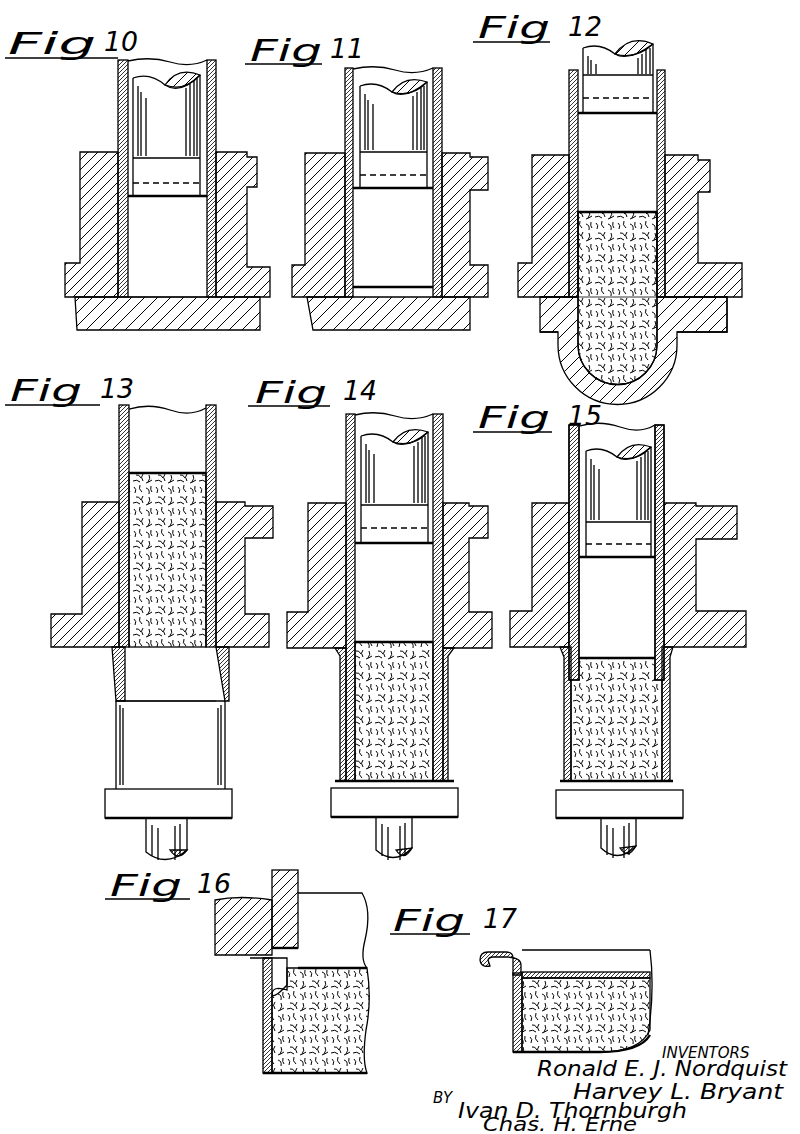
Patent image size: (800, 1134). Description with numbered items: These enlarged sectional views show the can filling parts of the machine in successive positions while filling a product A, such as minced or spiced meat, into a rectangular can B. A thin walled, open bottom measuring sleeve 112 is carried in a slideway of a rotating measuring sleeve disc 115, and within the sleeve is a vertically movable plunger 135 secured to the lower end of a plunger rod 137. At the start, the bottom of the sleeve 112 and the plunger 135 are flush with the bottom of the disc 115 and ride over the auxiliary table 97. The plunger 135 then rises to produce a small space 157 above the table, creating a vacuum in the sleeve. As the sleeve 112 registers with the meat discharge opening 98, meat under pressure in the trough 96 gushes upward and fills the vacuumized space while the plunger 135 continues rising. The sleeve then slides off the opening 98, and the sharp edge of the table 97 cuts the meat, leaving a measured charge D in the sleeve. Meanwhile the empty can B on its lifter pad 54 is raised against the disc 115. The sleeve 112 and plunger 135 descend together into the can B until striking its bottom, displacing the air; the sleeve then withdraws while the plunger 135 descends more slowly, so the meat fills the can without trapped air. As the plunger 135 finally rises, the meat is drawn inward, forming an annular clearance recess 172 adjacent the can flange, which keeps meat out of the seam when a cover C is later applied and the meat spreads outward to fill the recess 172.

In FIG. 13, the lifter pad 54 is at (123, 804).
In FIG. 14, the lifter pad 54 is at (355, 802).
In FIG. 15, the lifter pad 54 is at (580, 801).
In FIG. 12, the trough 96 is at (658, 360).
In FIG. 10, the auxiliary table 97 is at (95, 318).
In FIG. 11, the auxiliary table 97 is at (328, 317).
In FIG. 12, the auxiliary table 97 is at (707, 320).
In FIG. 12, the meat discharge opening 98 is at (617, 292).
In FIG. 10, the measuring sleeve 112 is at (123, 222).
In FIG. 11, the measuring sleeve 112 is at (437, 220).
In FIG. 12, the measuring sleeve 112 is at (660, 172).
In FIG. 13, the measuring sleeve 112 is at (125, 557).
In FIG. 14, the measuring sleeve 112 is at (441, 570).
In FIG. 15, the measuring sleeve 112 is at (571, 574).
In FIG. 16, the measuring sleeve 112 is at (282, 872).
In FIG. 10, the measuring sleeve disc 115 is at (100, 175).
In FIG. 11, the measuring sleeve disc 115 is at (318, 182).
In FIG. 12, the measuring sleeve disc 115 is at (542, 180).
In FIG. 13, the measuring sleeve disc 115 is at (243, 524).
In FIG. 14, the measuring sleeve disc 115 is at (325, 524).
In FIG. 15, the measuring sleeve disc 115 is at (549, 524).
In FIG. 16, the measuring sleeve disc 115 is at (233, 932).
In FIG. 10, the plunger 135 is at (167, 246).
In FIG. 11, the plunger 135 is at (393, 222).
In FIG. 12, the plunger 135 is at (617, 162).
In FIG. 13, the plunger 135 is at (167, 444).
In FIG. 14, the plunger 135 is at (394, 592).
In FIG. 15, the plunger 135 is at (617, 607).
In FIG. 16, the plunger 135 is at (333, 930).
In FIG. 10, the plunger rod 137 is at (157, 103).
In FIG. 11, the plunger rod 137 is at (402, 112).
In FIG. 12, the plunger rod 137 is at (633, 62).
In FIG. 14, the plunger rod 137 is at (403, 467).
In FIG. 15, the plunger rod 137 is at (633, 476).
In FIG. 11, the small space 157 is at (388, 292).
In FIG. 16, the annular clearance recess 172 is at (276, 985).
In FIG. 12, the product A is at (633, 247).
In FIG. 13, the product A is at (187, 580).
In FIG. 14, the product A is at (376, 675).
In FIG. 15, the product A is at (633, 708).
In FIG. 16, the product A is at (320, 1047).
In FIG. 17, the product A is at (607, 1005).
In FIG. 13, the can B is at (144, 732).
In FIG. 14, the can B is at (344, 707).
In FIG. 15, the can B is at (567, 719).
In FIG. 16, the can B is at (263, 1033).
In FIG. 17, the can B is at (520, 1018).
In FIG. 17, the cover C is at (510, 952).
In FIG. 13, the measured charge D is at (138, 524).